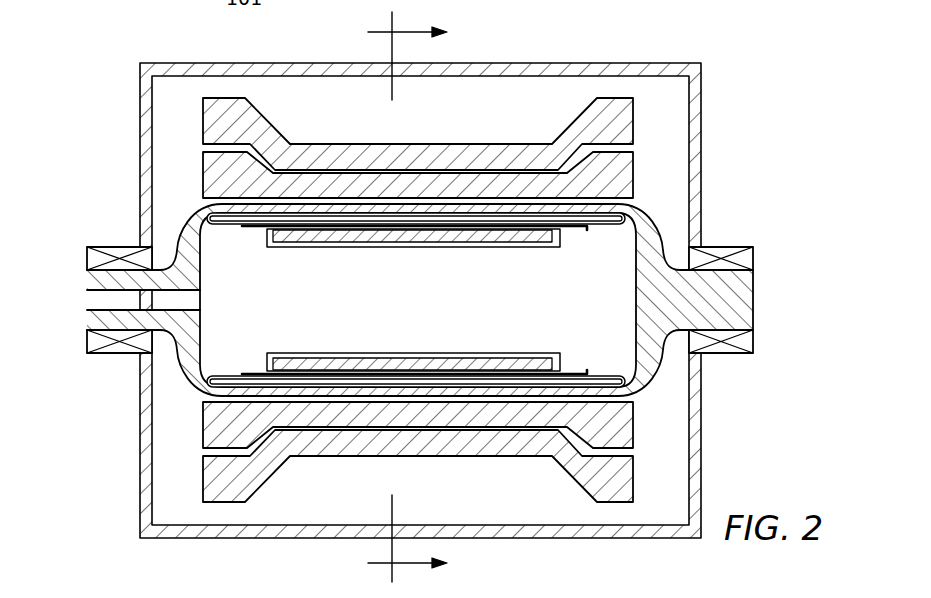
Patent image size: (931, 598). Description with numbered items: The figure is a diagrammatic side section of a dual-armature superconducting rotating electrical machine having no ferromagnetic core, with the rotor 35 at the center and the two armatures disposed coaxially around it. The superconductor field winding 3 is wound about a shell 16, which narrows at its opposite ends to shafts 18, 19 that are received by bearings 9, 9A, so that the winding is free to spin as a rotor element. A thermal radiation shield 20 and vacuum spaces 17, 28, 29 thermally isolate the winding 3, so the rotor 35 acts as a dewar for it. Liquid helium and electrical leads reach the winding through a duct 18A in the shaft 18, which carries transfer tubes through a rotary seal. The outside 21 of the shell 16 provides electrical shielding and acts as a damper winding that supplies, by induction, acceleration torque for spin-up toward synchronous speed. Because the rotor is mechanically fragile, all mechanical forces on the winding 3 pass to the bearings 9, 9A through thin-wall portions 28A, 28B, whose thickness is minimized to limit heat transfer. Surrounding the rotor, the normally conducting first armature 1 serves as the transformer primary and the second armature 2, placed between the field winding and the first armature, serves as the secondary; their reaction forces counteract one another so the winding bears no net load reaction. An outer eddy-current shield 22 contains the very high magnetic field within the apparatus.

The first armature 1 is at (633, 136).
The second armature 2 is at (633, 178).
The superconductor field winding 3 is at (521, 238).
The bearing 9 is at (110, 354).
The bearing 9A is at (727, 355).
The shell 16 is at (421, 272).
The vacuum space 17 is at (486, 316).
The shaft 18 is at (93, 280).
The duct 18A is at (100, 300).
The shaft 19 is at (743, 322).
The thermal radiation shield 20 is at (385, 226).
The outside of the shell 21 is at (240, 205).
The outer eddy-current shield 22 is at (670, 63).
The vacuum space 28 is at (232, 224).
The thin-wall portion 28A is at (245, 378).
The thin-wall portion 28B is at (597, 343).
The vacuum space 29 is at (257, 227).
The rotor 35 is at (660, 213).